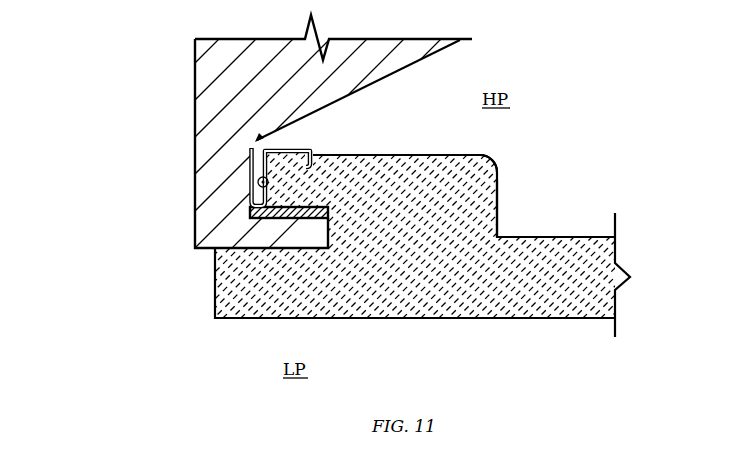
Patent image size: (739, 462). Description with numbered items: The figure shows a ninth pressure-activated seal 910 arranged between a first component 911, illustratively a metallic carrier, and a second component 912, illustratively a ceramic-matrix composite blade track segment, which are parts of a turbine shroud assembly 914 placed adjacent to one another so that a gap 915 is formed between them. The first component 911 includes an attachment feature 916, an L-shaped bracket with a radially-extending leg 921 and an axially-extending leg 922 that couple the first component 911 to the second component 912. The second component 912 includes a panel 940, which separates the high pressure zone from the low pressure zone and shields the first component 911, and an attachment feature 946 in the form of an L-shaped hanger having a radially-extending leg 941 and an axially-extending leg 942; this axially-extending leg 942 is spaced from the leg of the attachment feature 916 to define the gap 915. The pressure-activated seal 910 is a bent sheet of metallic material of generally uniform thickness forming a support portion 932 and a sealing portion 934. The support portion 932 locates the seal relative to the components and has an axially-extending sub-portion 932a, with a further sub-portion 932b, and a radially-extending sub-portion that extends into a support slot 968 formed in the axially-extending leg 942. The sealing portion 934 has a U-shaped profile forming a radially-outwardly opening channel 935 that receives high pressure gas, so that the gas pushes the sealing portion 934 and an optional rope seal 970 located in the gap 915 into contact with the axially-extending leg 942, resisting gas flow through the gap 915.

The pressure-activated seal 910 is at (207, 139).
The first component 911 is at (188, 72).
The second component 912 is at (469, 328).
The turbine shroud assembly 914 is at (553, 89).
The gap 915 is at (243, 208).
The attachment feature 916 is at (164, 172).
The radially-extending leg 921 is at (216, 200).
The axially-extending leg 922 is at (268, 236).
The support portion 932 is at (249, 139).
The axially-extending sub-portion 932a is at (298, 149).
The retainer lip 932b is at (338, 156).
The sealing portion 934 is at (253, 138).
The channel 935 is at (243, 162).
The panel 940 is at (354, 303).
The radially-extending leg 941 is at (482, 217).
The axially-extending leg 942 is at (405, 150).
The attachment feature 946 is at (505, 186).
The support slot 968 is at (310, 168).
The rope seal 970 is at (276, 182).